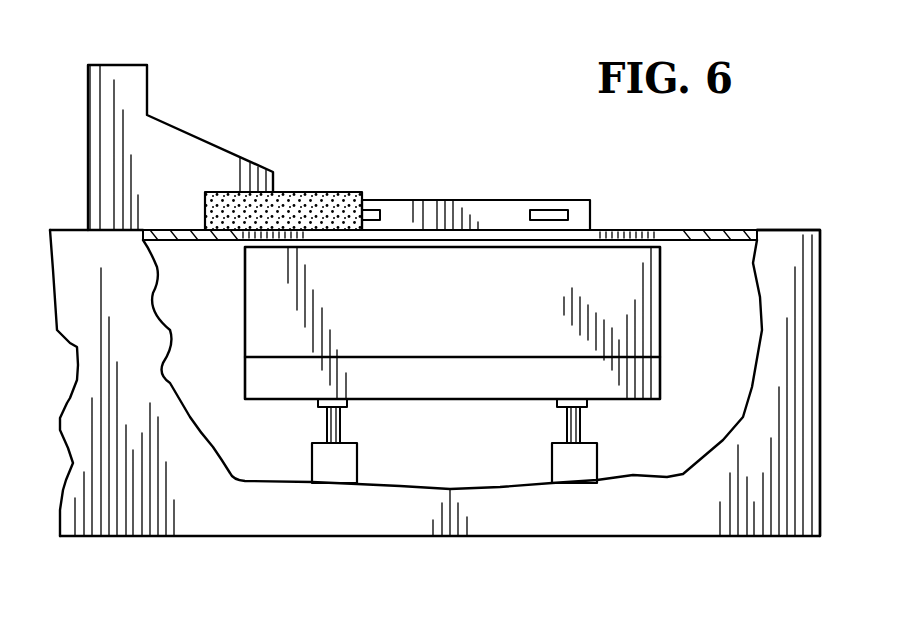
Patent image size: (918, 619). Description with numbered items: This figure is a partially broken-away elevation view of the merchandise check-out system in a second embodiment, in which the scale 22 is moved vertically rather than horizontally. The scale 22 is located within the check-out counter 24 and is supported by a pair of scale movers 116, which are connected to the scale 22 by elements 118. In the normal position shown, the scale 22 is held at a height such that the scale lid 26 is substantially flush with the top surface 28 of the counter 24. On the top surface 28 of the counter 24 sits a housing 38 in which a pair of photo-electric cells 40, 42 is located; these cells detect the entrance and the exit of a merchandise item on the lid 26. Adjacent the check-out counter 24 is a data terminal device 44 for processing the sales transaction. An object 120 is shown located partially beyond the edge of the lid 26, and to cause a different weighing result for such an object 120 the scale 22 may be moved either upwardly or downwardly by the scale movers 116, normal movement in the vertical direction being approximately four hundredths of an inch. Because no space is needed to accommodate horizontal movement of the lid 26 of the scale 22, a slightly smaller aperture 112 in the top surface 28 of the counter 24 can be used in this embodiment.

The scale 22 is at (453, 402).
The check-out counter 24 is at (655, 522).
The scale lid 26 is at (622, 232).
The top surface 28 is at (783, 230).
The housing 38 is at (480, 200).
The photo-electric cell 40 is at (377, 210).
The photo-electric cell 42 is at (548, 208).
The data terminal device 44 is at (113, 72).
The aperture 112 is at (675, 230).
The scale mover 116 is at (348, 450).
The element 118 is at (342, 418).
The object 120 is at (297, 192).